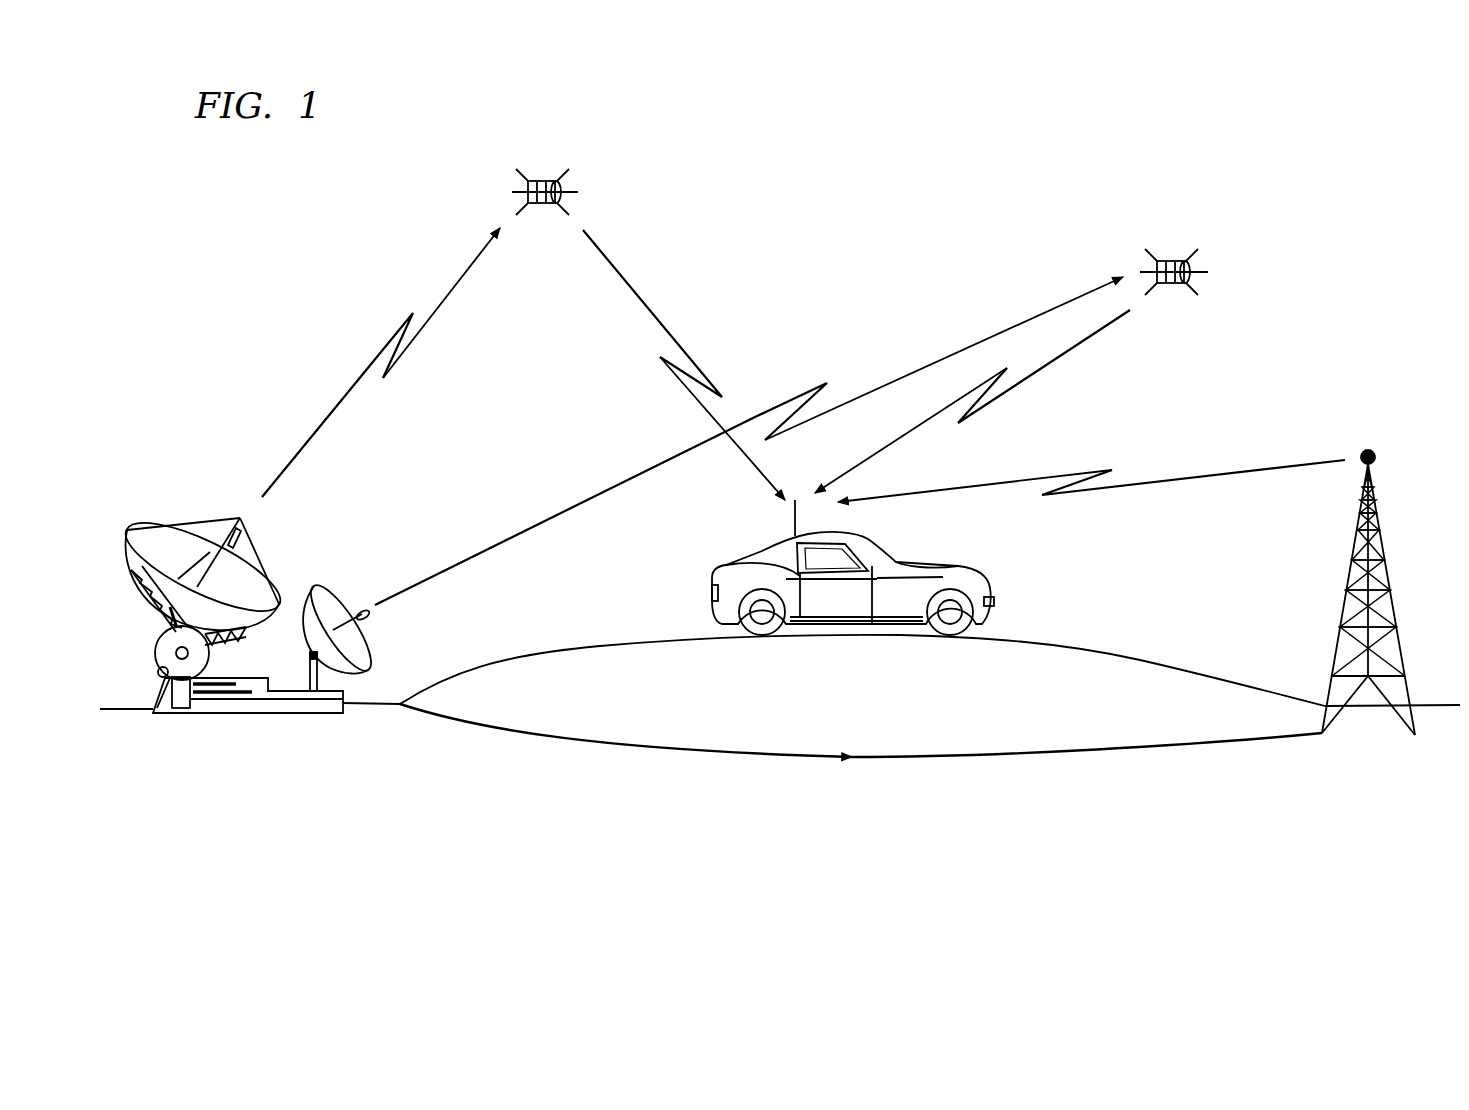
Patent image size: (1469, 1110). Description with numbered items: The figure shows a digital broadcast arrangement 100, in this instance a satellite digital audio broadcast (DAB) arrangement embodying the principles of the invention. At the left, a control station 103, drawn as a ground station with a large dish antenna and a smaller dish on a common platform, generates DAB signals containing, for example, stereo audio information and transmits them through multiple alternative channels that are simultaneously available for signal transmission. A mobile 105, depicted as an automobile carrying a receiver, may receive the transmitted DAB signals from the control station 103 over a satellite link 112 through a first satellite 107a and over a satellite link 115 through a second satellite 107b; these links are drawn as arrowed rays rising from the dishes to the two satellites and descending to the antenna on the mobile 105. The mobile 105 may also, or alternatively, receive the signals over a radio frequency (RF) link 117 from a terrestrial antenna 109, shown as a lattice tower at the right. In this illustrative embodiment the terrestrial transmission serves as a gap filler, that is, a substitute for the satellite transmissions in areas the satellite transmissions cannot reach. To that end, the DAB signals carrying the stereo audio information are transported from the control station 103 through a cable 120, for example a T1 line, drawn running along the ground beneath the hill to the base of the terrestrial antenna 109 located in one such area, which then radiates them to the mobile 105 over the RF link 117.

The digital broadcast arrangement 100 is at (270, 166).
The control station 103 is at (287, 707).
The mobile 105 is at (968, 575).
The satellite 107a is at (562, 184).
The satellite 107b is at (1192, 264).
The terrestrial antenna 109 is at (1381, 516).
The satellite link 112 is at (600, 255).
The satellite link 115 is at (1100, 327).
The radio frequency (RF) link 117 is at (1232, 472).
The cable 120 is at (943, 760).